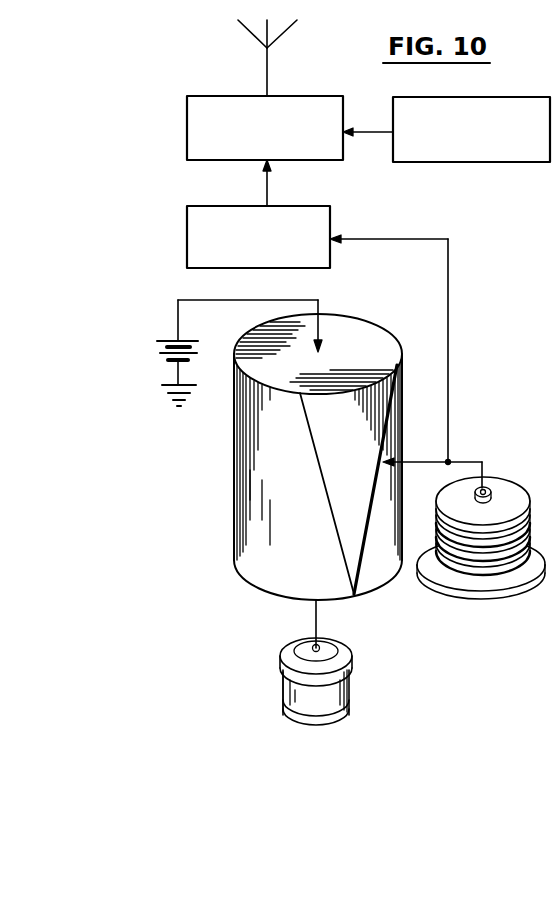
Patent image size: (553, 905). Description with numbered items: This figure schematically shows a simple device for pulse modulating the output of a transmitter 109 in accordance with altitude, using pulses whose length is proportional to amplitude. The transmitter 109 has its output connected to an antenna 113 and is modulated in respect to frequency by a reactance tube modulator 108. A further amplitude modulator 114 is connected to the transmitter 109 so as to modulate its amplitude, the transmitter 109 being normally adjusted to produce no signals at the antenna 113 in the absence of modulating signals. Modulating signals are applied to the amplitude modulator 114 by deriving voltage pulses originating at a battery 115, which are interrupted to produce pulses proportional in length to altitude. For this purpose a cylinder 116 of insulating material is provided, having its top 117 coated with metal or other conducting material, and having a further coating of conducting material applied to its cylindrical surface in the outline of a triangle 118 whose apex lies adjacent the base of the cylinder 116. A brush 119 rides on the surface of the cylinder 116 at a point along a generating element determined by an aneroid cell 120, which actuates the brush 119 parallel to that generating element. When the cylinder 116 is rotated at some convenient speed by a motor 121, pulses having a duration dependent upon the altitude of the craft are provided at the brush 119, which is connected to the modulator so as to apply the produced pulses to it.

The reactance tube modulator 108 is at (525, 156).
The transmitter 109 is at (251, 104).
The antenna 113 is at (248, 30).
The amplitude modulator 114 is at (247, 212).
The battery 115 is at (176, 338).
The cylinder 116 is at (252, 498).
The top of cylinder 117 is at (352, 330).
The triangle 118 is at (322, 432).
The brush 119 is at (390, 451).
The aneroid cell 120 is at (503, 480).
The motor 121 is at (292, 682).